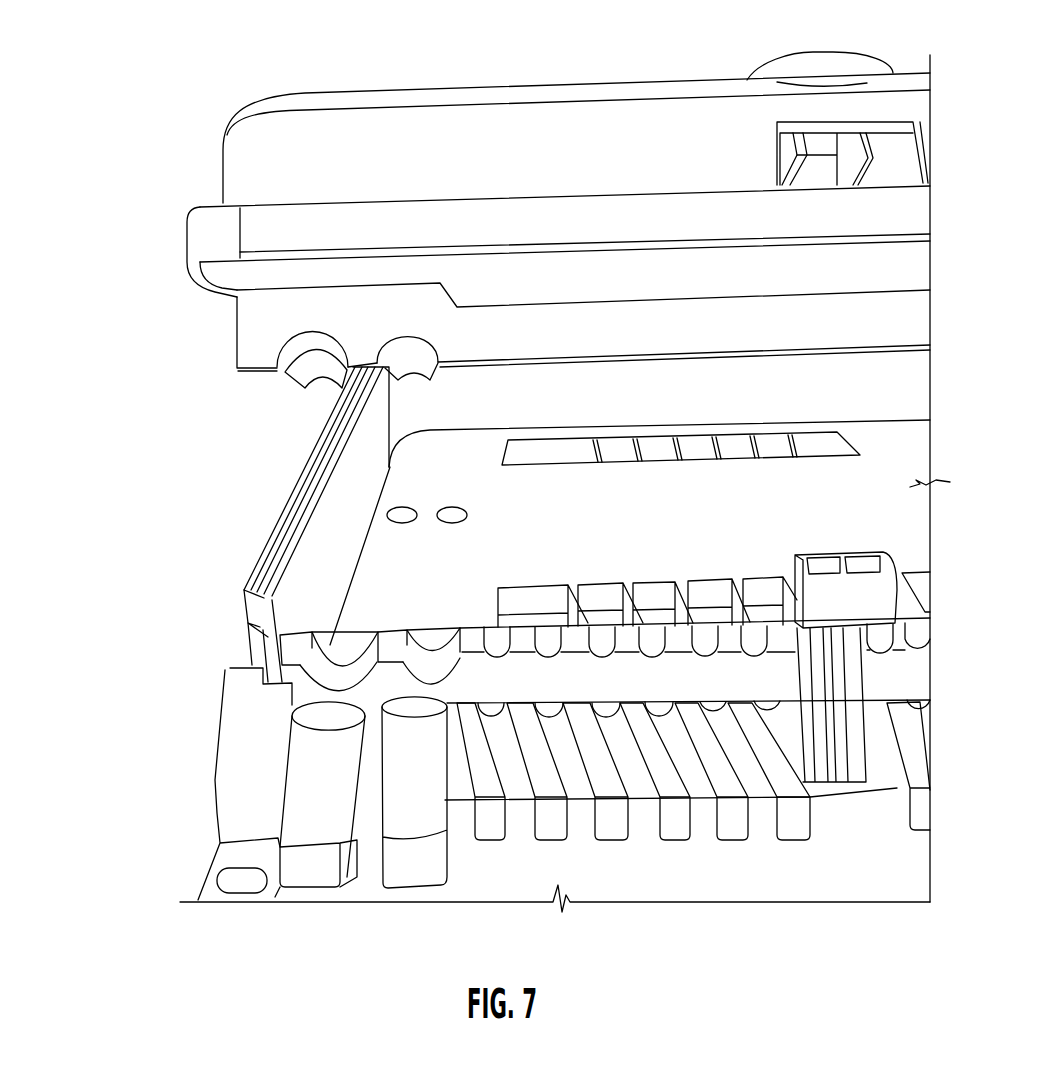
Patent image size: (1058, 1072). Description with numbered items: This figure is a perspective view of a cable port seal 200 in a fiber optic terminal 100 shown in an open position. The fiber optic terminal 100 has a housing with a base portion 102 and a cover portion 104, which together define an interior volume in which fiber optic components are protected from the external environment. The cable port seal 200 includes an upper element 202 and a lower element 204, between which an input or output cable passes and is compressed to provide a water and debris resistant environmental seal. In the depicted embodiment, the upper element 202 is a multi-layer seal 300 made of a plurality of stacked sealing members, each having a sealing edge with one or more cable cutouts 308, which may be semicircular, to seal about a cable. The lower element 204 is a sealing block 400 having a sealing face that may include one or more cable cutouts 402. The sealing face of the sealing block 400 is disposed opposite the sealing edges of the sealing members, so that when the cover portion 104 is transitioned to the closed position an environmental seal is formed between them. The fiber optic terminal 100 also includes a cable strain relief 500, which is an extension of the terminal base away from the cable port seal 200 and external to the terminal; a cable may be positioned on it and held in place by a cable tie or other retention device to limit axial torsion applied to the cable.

The fiber optic terminal 100 is at (488, 231).
The cover portion 104 is at (226, 150).
The multi-layer seal 300 is at (534, 347).
The cable cutouts 308 is at (293, 364).
The base portion 102 is at (251, 557).
The cable port seal 200 is at (516, 633).
The upper element 202 is at (495, 399).
The lower element 204 is at (509, 601).
The sealing block 400 is at (304, 758).
The cable cutouts 402 is at (391, 683).
The cable strain relief 500 is at (310, 794).